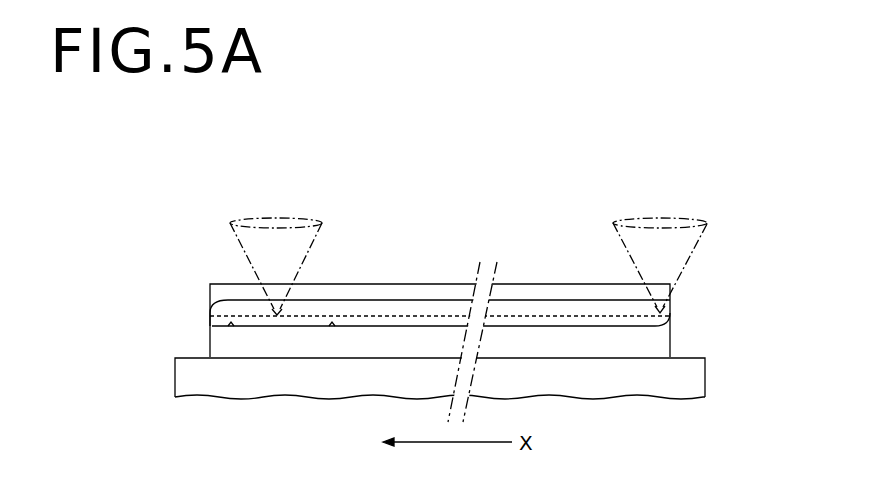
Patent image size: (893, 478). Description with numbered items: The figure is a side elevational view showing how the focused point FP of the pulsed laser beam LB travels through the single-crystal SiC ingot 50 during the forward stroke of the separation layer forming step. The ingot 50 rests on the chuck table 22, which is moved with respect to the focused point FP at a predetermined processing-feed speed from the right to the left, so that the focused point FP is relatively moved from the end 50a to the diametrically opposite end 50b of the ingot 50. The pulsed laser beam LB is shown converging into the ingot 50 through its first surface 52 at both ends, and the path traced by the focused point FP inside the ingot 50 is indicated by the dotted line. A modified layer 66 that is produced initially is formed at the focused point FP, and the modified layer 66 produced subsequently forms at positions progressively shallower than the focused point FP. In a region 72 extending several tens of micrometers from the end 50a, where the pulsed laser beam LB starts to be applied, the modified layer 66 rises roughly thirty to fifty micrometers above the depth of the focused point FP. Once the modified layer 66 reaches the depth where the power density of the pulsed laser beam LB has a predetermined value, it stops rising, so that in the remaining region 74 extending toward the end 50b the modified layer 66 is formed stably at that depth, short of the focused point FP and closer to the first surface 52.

The chuck table 22 is at (693, 377).
The single-crystal SiC ingot 50 is at (671, 340).
The first surface 52 is at (533, 284).
The modified layer 66 is at (423, 298).
The end of the ingot 50a is at (208, 317).
The diametrically opposite end of the ingot 50b is at (670, 316).
The region where the modified layer rises 72 is at (225, 340).
The region of stable modified layer formation 74 is at (335, 340).
The focused point FP is at (278, 314).
The pulsed laser beam LB is at (248, 259).